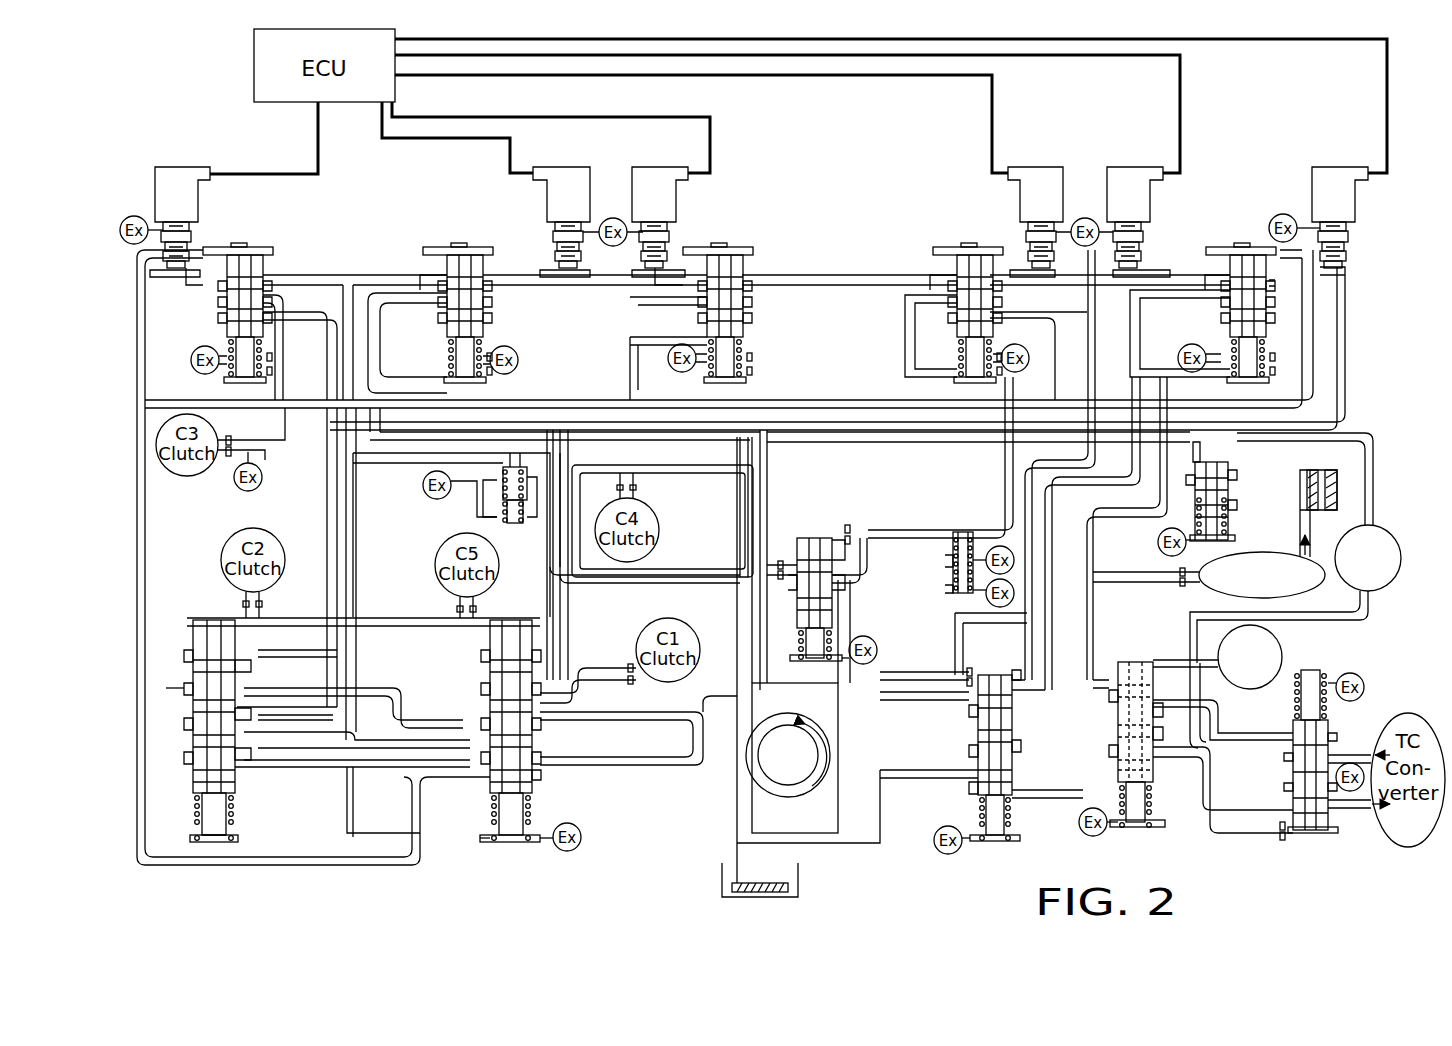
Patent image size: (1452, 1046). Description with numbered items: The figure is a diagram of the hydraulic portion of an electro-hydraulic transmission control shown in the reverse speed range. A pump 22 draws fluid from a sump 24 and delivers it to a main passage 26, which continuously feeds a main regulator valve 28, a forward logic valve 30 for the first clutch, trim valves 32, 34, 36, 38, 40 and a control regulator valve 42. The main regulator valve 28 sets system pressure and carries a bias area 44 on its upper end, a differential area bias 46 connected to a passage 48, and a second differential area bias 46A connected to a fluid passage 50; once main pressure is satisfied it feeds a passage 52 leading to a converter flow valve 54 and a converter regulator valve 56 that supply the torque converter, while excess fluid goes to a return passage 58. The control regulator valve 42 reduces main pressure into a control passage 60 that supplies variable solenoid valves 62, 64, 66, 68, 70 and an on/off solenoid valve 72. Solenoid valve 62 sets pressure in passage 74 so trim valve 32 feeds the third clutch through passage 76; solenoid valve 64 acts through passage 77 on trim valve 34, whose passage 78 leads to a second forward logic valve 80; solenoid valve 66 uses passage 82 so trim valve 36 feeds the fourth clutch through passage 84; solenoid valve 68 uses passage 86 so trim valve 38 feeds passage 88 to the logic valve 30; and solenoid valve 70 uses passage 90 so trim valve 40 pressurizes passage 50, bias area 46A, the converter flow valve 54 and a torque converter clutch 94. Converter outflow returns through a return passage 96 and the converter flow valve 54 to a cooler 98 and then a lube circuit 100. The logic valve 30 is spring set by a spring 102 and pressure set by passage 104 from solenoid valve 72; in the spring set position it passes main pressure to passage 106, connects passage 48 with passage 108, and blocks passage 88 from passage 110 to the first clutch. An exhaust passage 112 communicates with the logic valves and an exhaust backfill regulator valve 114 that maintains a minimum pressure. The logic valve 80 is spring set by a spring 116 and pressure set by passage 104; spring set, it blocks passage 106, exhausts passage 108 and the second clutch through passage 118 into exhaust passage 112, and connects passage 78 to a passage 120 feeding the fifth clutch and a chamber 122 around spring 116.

The pump 22 is at (730, 777).
The sump 24 is at (728, 866).
The main passage 26 is at (760, 660).
The main regulator valve 28 is at (1005, 670).
The C1 forward logic valve 30 is at (548, 738).
The trim valve 32 is at (215, 318).
The trim valve 34 is at (492, 320).
The trim valve 36 is at (750, 340).
The trim valve 38 is at (948, 322).
The trim valve 40 is at (1225, 326).
The control regulator valve 42 is at (848, 525).
The bias area 44 is at (985, 675).
The differential area bias 46 is at (1012, 697).
The second differential area bias 46A is at (1012, 712).
The passage 48 is at (635, 757).
The fluid passage 50 is at (1033, 567).
The passage 52 is at (1033, 800).
The converter flow valve 54 is at (1160, 790).
The converter regulator valve 56 is at (1340, 812).
The return passage 58 is at (818, 833).
The control passage 60 is at (172, 395).
The solenoid valve 62 is at (182, 217).
The solenoid valve 64 is at (561, 217).
The solenoid valve 66 is at (660, 217).
The solenoid valve 68 is at (1035, 217).
The solenoid valve 70 is at (1135, 217).
The on/off solenoid valve 72 is at (1340, 217).
The passage 74 is at (225, 247).
The passage 76 is at (265, 452).
The passage 77 is at (488, 247).
The passage 78 is at (380, 434).
The C2 forward logic valve 80 is at (185, 645).
The passage 82 is at (700, 247).
The passage 84 is at (635, 340).
The passage 86 is at (990, 247).
The passage 88 is at (862, 445).
The passage 90 is at (1222, 247).
The torque converter clutch 94 is at (1288, 652).
The return passage 96 is at (1237, 730).
The cooler 98 is at (1215, 590).
The lube circuit 100 is at (1395, 535).
The spring 102 is at (490, 822).
The passage 104 is at (533, 600).
The passage 106 is at (380, 700).
The passage 108 is at (375, 765).
The passage 110 is at (604, 667).
The exhaust passage 112 is at (332, 277).
The exhaust backfill regulator valve 114 is at (525, 447).
The spring 116 is at (195, 822).
The passage 118 is at (290, 640).
The passage 120 is at (298, 770).
The chamber 122 is at (216, 842).